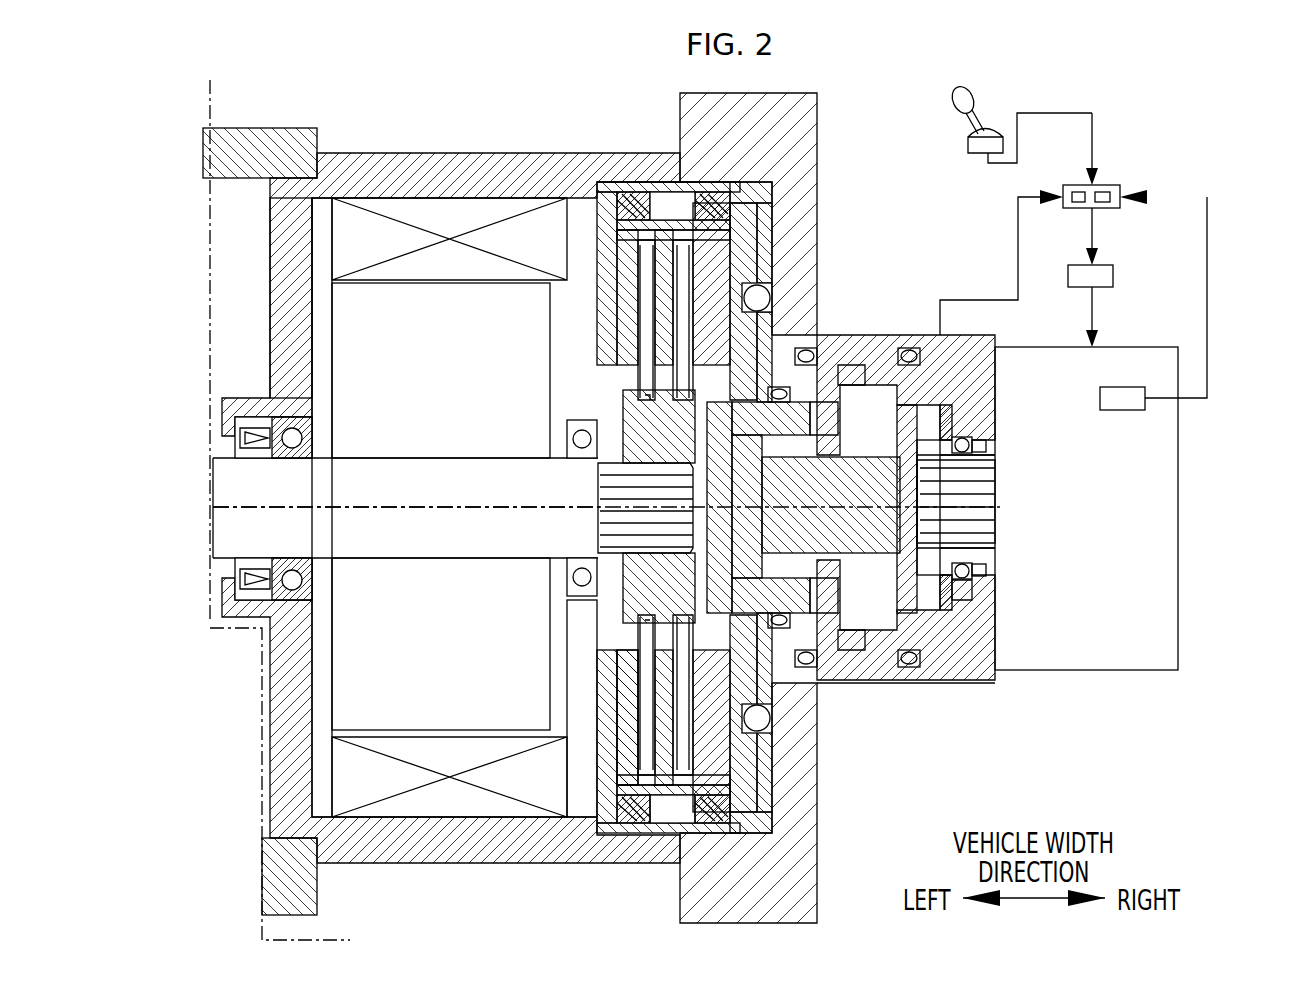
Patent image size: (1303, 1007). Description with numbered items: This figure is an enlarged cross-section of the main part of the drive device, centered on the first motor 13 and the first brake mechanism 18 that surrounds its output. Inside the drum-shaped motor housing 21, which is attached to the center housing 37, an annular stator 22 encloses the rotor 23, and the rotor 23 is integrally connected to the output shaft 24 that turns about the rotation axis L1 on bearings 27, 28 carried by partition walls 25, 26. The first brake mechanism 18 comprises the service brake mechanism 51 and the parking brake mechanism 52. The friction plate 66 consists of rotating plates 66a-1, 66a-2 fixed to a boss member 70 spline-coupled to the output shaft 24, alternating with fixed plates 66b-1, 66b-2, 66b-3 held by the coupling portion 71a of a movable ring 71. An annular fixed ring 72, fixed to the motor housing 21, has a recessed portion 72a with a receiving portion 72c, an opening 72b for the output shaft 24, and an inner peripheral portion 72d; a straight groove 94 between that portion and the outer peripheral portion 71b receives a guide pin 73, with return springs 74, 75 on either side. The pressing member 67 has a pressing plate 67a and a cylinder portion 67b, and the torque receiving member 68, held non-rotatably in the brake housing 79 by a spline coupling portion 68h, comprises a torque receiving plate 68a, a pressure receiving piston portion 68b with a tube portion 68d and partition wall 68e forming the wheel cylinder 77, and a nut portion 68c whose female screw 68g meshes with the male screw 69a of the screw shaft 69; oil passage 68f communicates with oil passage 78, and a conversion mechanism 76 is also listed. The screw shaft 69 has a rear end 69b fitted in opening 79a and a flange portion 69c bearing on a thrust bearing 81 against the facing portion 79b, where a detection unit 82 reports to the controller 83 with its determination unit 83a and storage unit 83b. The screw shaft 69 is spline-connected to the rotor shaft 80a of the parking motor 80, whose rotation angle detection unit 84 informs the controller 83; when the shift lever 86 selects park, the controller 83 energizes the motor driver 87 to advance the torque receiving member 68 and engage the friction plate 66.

The first motor 13 is at (415, 203).
The first brake mechanism 18 is at (968, 263).
The motor housing 21 is at (441, 175).
The stator 22 is at (500, 210).
The rotor 23 is at (408, 679).
The output shaft 24 is at (214, 483).
The partition wall 25 is at (292, 283).
The partition wall 26 is at (585, 632).
The bearing 27 is at (300, 436).
The bearing 28 is at (576, 578).
The center housing 37 is at (253, 120).
The service brake mechanism 51 is at (638, 887).
The parking brake mechanism 52 is at (937, 714).
The friction plate 66 is at (627, 377).
The first rotating plate 66a-1 is at (665, 335).
The second rotating plate 66a-2 is at (628, 300).
The first fixed plate 66b-1 is at (712, 263).
The second fixed plate 66b-2 is at (650, 320).
The third fixed plate 66b-3 is at (680, 350).
The pressing member 67 is at (752, 797).
The pressing plate 67a is at (735, 247).
The cylinder portion 67b is at (823, 360).
The torque receiving member 68 is at (775, 730).
The torque receiving plate 68a is at (753, 805).
The pressure receiving piston portion 68b is at (858, 365).
The nut portion 68c is at (780, 455).
The tube portion 68d is at (835, 520).
The partition wall 68e is at (848, 592).
The oil passage 68f is at (778, 687).
The female screw 68g is at (722, 440).
The spline coupling portion 68h is at (780, 290).
The screw shaft 69 is at (942, 520).
The male screw 69a is at (848, 465).
The rear end 69b is at (975, 462).
The flange portion 69c is at (960, 400).
The boss member 70 is at (598, 466).
The movable ring 71 is at (640, 878).
The coupling portion 71a is at (625, 787).
The outer peripheral portion 71b is at (672, 210).
The fixed ring 72 is at (598, 810).
The recessed portion 72a is at (605, 242).
The opening 72b is at (612, 660).
The receiving portion 72c is at (612, 700).
The inner peripheral portion 72d is at (672, 825).
The guide pin 73 is at (650, 200).
The return spring 74 is at (622, 198).
The return spring 75 is at (745, 228).
The conversion mechanism 76 is at (770, 745).
The wheel cylinder 77 is at (898, 340).
The oil passage 78 is at (790, 705).
The brake housing 79 is at (788, 117).
The opening 79a is at (975, 577).
The facing portion 79b is at (978, 604).
The parking motor 80 is at (1180, 458).
The rotor shaft 80a is at (975, 497).
The thrust bearing 81 is at (945, 420).
The detection unit 82 is at (962, 440).
The controller 83 is at (1122, 190).
The determination unit 83a is at (1078, 192).
The storage unit 83b is at (1105, 192).
The rotation angle detection unit 84 is at (1125, 387).
The shift lever 86 is at (976, 98).
The motor driver 87 is at (1115, 276).
The straight groove 94 is at (687, 823).
The rotation axis L1 is at (400, 515).